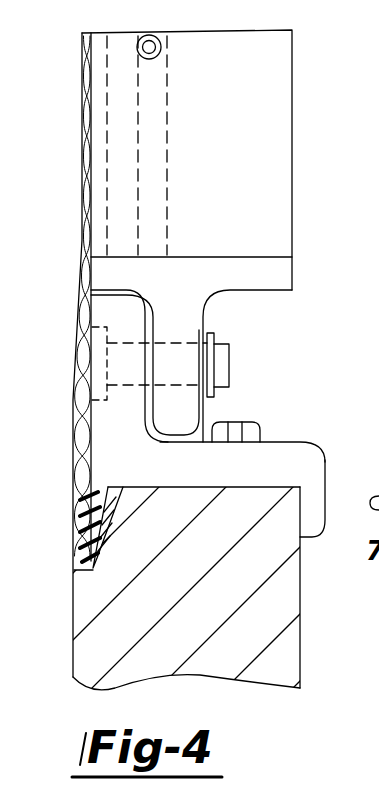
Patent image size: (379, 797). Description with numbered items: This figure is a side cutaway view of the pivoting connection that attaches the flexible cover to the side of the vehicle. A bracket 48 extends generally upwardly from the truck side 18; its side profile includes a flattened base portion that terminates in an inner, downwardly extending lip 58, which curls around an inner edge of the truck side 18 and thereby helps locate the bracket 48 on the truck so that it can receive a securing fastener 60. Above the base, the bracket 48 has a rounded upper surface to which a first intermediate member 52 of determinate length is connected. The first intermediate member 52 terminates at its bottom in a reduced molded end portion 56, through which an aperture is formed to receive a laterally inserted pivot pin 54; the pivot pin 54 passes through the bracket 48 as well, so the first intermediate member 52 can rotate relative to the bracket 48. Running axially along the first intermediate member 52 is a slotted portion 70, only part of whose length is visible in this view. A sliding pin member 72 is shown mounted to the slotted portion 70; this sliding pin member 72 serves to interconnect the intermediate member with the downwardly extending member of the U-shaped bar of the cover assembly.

The truck side 18 is at (85, 638).
The bracket 48 is at (275, 466).
The first intermediate member 52 is at (292, 190).
The pivot pin 54 is at (82, 372).
The reduced molded end portion 56 is at (203, 310).
The downwardly extending lip 58 is at (313, 486).
The securing fastener 60 is at (238, 420).
The slotted portion 70 is at (151, 91).
The sliding pin member 72 is at (144, 36).